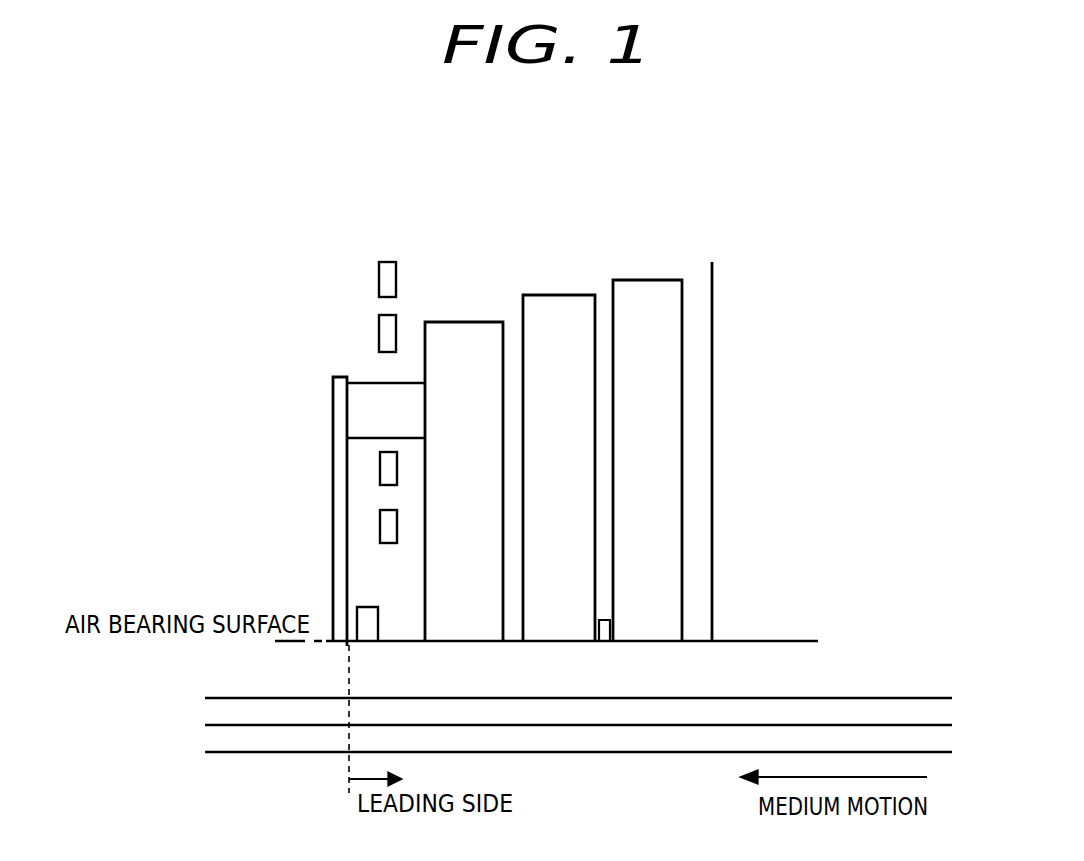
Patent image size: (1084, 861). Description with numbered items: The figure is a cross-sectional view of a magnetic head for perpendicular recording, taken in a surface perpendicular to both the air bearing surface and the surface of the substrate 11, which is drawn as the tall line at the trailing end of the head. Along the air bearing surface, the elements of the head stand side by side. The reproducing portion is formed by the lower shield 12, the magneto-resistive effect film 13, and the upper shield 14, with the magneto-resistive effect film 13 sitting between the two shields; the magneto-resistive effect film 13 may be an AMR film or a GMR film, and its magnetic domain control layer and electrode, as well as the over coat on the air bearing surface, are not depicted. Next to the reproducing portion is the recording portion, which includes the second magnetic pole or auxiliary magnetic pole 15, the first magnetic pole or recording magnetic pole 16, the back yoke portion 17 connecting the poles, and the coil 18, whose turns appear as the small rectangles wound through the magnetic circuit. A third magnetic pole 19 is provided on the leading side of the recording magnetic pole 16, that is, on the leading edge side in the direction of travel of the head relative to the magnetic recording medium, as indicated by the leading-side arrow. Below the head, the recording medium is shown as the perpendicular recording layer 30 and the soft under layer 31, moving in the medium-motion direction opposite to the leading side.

The substrate 11 is at (747, 572).
The lower shield 12 is at (648, 641).
The magneto-resistive effect film 13 is at (603, 641).
The upper shield 14 is at (562, 641).
The second magnetic pole or auxiliary magnetic pole 15 is at (465, 641).
The first magnetic pole or recording magnetic pole 16 is at (340, 413).
The back yoke portion 17 is at (368, 397).
The coil 18 is at (396, 283).
The third magnetic pole 19 is at (368, 642).
The perpendicular recording layer 30 is at (217, 714).
The soft under layer 31 is at (217, 748).